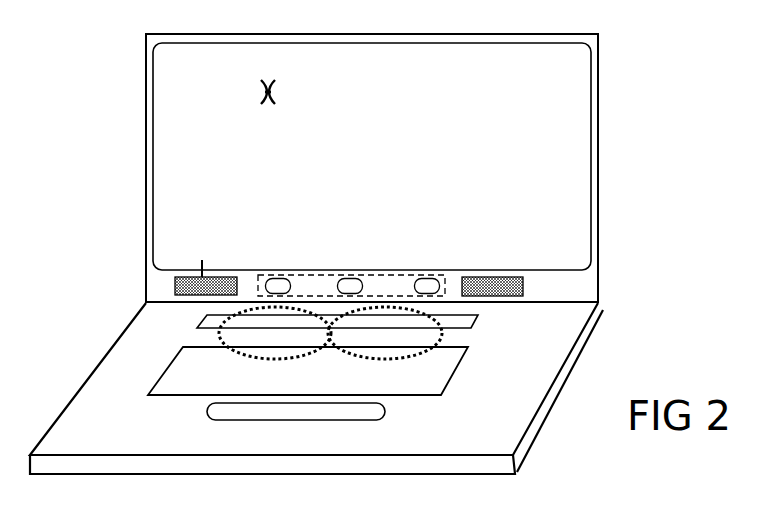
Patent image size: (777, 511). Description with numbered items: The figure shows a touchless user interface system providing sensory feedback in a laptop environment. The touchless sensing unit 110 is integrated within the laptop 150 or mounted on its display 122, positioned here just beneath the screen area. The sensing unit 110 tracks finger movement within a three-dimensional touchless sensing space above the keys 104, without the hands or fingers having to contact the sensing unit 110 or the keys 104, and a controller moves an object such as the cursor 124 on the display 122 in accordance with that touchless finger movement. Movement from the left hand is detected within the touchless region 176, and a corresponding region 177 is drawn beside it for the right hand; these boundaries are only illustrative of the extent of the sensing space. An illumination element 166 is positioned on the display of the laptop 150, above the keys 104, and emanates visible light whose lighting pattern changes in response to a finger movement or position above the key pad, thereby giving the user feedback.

The laptop 150 is at (691, 91).
The display 122 is at (175, 112).
The cursor 124 is at (272, 125).
The touchless sensing unit 110 is at (389, 275).
The illumination element 166 is at (172, 283).
The keys 104 is at (452, 376).
The touchless region 176 is at (310, 360).
The right button region 177 is at (352, 358).